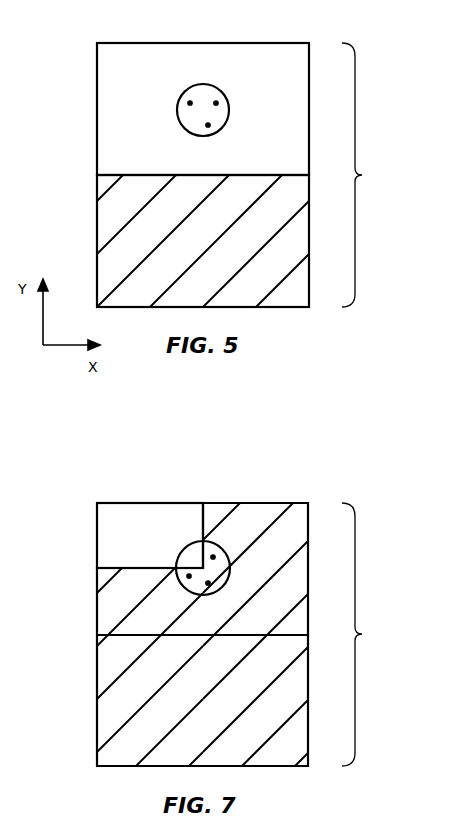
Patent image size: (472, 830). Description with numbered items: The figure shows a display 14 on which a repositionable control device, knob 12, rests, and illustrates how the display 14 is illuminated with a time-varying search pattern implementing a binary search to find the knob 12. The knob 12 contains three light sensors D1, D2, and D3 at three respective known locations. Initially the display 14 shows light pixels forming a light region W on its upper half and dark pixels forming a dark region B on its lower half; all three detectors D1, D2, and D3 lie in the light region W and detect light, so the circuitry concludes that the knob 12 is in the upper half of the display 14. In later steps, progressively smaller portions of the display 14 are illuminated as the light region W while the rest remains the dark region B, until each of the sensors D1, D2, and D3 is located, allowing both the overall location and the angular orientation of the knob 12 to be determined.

In FIG. 5, the knob 12 is at (204, 84).
In FIG. 7, the knob 12 is at (230, 565).
In FIG. 5, the display 14 is at (363, 175).
In FIG. 7, the display 14 is at (363, 634).
In FIG. 5, the light pixel region W is at (108, 108).
In FIG. 7, the light pixel region W is at (108, 538).
In FIG. 5, the dark pixel region B is at (109, 233).
In FIG. 7, the dark pixel region B is at (273, 512).
In FIG. 5, the light sensor D1 is at (188, 102).
In FIG. 7, the light sensor D1 is at (187, 573).
In FIG. 5, the light sensor D2 is at (225, 103).
In FIG. 7, the light sensor D2 is at (214, 555).
In FIG. 5, the light sensor D3 is at (210, 127).
In FIG. 7, the light sensor D3 is at (218, 583).